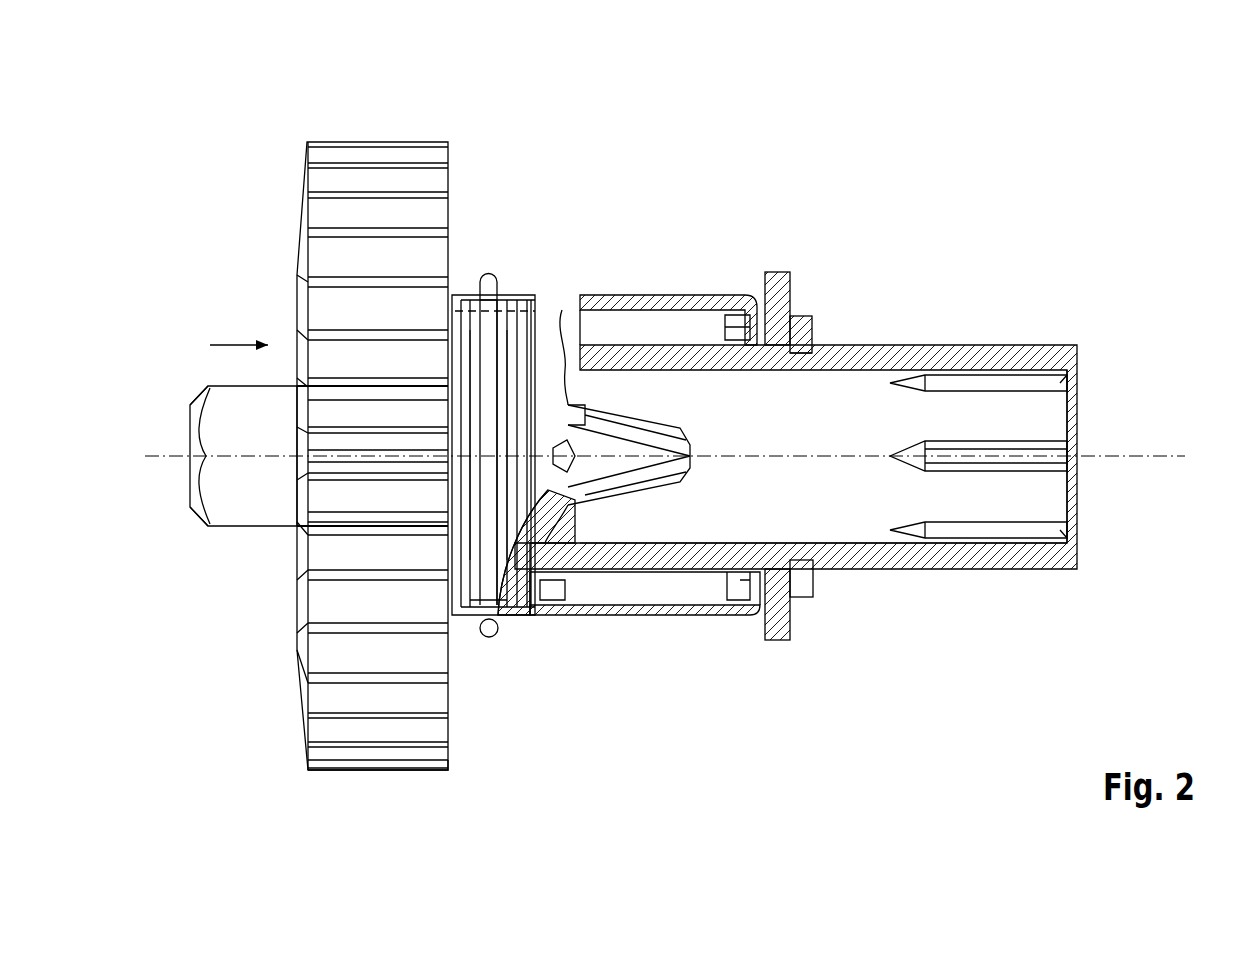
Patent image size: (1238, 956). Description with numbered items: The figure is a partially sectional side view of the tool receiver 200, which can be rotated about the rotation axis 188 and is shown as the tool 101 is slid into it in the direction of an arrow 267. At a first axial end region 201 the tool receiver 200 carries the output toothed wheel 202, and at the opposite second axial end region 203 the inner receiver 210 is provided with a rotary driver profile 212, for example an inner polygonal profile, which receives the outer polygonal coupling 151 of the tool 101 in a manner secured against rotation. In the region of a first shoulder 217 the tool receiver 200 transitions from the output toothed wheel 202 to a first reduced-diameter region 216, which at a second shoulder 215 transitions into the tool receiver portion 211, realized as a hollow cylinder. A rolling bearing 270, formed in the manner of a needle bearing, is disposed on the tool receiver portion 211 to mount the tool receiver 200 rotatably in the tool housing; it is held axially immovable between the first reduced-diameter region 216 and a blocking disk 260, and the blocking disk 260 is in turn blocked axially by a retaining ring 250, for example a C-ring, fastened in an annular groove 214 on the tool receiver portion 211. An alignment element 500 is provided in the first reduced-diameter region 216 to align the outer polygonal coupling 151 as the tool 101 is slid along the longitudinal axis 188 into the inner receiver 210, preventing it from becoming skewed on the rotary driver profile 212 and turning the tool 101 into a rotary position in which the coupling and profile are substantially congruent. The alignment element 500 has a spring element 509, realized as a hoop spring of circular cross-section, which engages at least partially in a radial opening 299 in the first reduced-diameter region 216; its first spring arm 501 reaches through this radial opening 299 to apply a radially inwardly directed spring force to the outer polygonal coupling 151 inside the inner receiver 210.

The tool receiver 200 is at (952, 172).
The first axial end region 201 is at (288, 270).
The output toothed wheel 202 is at (372, 178).
The first shoulder 217 is at (458, 776).
The arrow 267 is at (235, 345).
The rotation axis 188 is at (152, 452).
The outer polygonal coupling 151 is at (232, 512).
The alignment element 500 is at (514, 349).
The first spring arm 501 is at (513, 474).
The spring element 509 is at (489, 276).
The first reduced-diameter region 216 is at (510, 300).
The rolling bearing 270 is at (578, 300).
The second shoulder 215 is at (537, 628).
The radial opening 299 is at (548, 478).
The tool 101 is at (600, 440).
The inner receiver 210 is at (820, 500).
The tool receiver portion 211 is at (950, 560).
The rotary driver profile 212 is at (1048, 482).
The second axial end region 203 is at (1090, 352).
The annular groove 214 is at (803, 366).
The blocking disk 260 is at (778, 272).
The retaining ring 250 is at (805, 316).